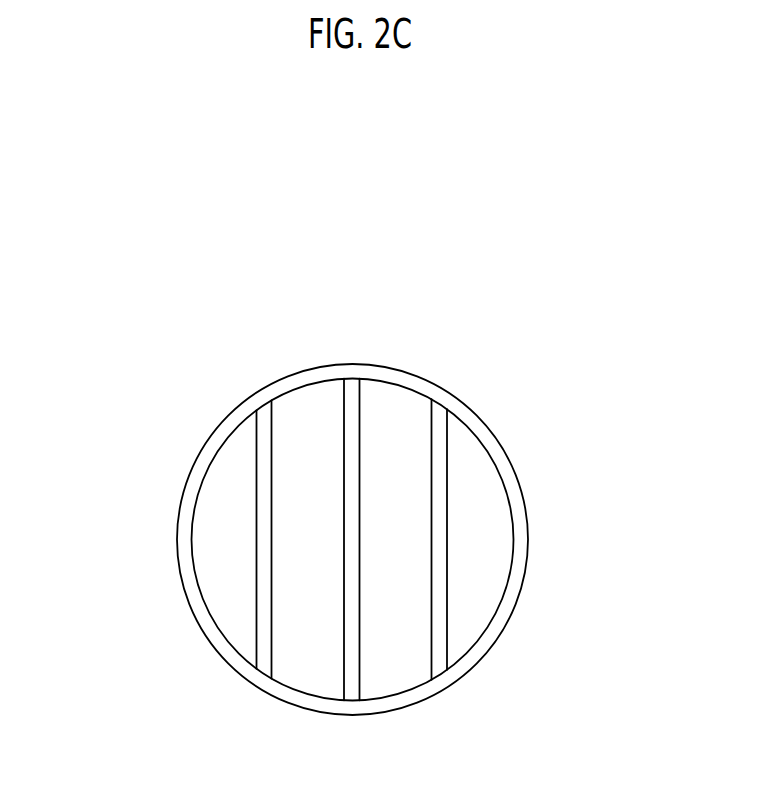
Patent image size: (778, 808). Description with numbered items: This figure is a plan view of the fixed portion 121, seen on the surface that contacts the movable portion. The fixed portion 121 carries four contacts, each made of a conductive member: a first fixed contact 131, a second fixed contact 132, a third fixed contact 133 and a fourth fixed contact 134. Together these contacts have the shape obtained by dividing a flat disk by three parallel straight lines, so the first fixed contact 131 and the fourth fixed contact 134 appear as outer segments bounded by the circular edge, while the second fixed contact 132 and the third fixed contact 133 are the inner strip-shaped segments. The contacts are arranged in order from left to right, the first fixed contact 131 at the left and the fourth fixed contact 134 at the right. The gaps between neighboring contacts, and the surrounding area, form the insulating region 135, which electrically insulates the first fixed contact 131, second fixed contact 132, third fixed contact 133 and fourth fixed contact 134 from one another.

The fixed portion 121 is at (181, 582).
The first fixed contact 131 is at (233, 500).
The second fixed contact 132 is at (305, 420).
The third fixed contact 133 is at (398, 420).
The fourth fixed contact 134 is at (478, 500).
The insulating region 135 is at (447, 673).